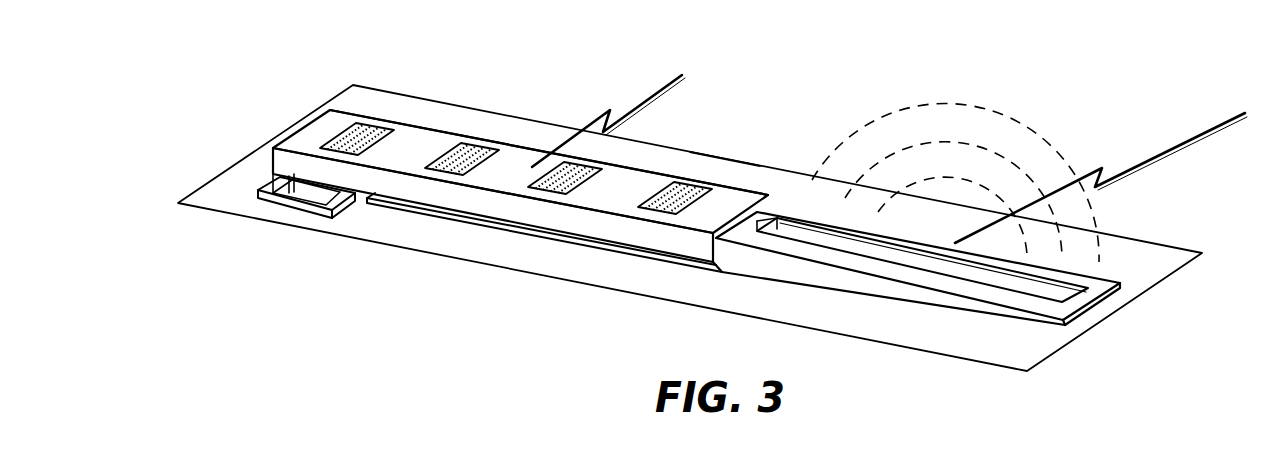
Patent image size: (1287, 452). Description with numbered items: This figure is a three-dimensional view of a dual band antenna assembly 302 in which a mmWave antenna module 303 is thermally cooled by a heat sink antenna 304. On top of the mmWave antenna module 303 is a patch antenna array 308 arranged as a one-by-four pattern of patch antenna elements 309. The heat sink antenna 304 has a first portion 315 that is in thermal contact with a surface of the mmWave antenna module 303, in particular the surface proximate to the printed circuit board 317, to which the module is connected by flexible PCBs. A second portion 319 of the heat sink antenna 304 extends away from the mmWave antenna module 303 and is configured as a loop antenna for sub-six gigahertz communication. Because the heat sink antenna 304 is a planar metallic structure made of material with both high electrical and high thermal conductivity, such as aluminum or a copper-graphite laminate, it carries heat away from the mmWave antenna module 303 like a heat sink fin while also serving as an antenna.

The dual band antenna assembly 302 is at (720, 83).
The mmWave antenna module 303 is at (297, 97).
The heat sink antenna 304 is at (790, 204).
The patch antenna array 308 is at (505, 185).
The patch antenna elements 309 is at (311, 130).
The first portion 315 is at (470, 224).
The printed circuit board 317 is at (722, 155).
The second portion 319 is at (920, 295).